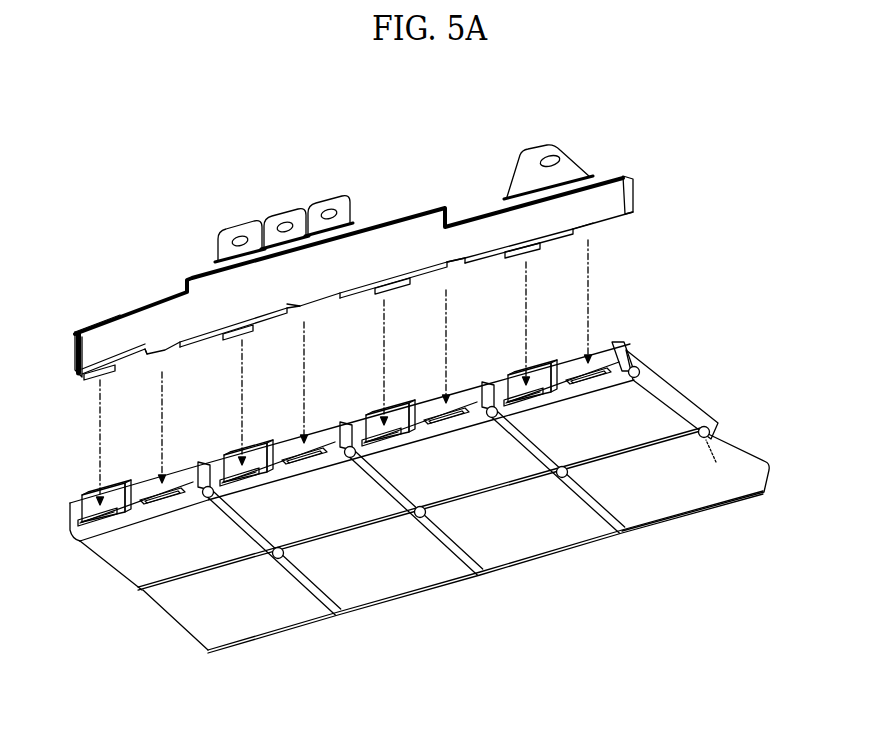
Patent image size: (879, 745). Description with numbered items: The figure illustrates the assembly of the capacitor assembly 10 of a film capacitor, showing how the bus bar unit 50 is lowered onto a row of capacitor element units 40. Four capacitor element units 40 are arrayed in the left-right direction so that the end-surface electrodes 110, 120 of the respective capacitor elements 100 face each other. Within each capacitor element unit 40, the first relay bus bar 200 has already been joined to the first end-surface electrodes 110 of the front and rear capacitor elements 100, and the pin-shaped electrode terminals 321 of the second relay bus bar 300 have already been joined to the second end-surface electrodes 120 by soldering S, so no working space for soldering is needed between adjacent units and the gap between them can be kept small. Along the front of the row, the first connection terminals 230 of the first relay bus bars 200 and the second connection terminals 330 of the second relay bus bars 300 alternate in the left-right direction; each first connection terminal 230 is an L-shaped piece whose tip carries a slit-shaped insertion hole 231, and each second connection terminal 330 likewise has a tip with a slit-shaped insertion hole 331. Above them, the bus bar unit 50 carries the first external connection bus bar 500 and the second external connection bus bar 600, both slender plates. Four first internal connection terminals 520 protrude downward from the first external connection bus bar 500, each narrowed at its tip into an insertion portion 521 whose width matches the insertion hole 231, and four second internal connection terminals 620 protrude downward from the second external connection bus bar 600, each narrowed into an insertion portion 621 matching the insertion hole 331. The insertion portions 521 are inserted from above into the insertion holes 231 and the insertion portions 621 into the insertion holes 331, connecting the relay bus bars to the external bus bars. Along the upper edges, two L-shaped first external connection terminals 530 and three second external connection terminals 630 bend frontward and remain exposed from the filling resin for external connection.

The capacitor assembly 10 is at (690, 156).
The capacitor element unit 40 is at (277, 640).
The bus bar unit 50 is at (98, 312).
The capacitor element 100 is at (697, 512).
The first end-surface electrode 110 is at (535, 470).
The second end-surface electrode 120 is at (672, 388).
The first relay bus bar 200 is at (490, 378).
The first connection terminal 230 is at (155, 487).
The insertion hole 231 is at (160, 502).
The second relay bus bar 300 is at (622, 343).
The electrode terminal 321 is at (642, 365).
The second connection terminal 330 is at (100, 494).
The insertion hole 331 is at (100, 522).
The first external connection bus bar 500 is at (165, 318).
The first internal connection terminal 520 is at (172, 348).
The insertion portion 521 is at (118, 378).
The first external connection terminal 530 is at (222, 235).
The second external connection bus bar 600 is at (580, 150).
The second internal connection terminal 620 is at (105, 388).
The insertion portion 621 is at (98, 382).
The second external connection terminal 630 is at (262, 222).
The soldering S is at (636, 380).